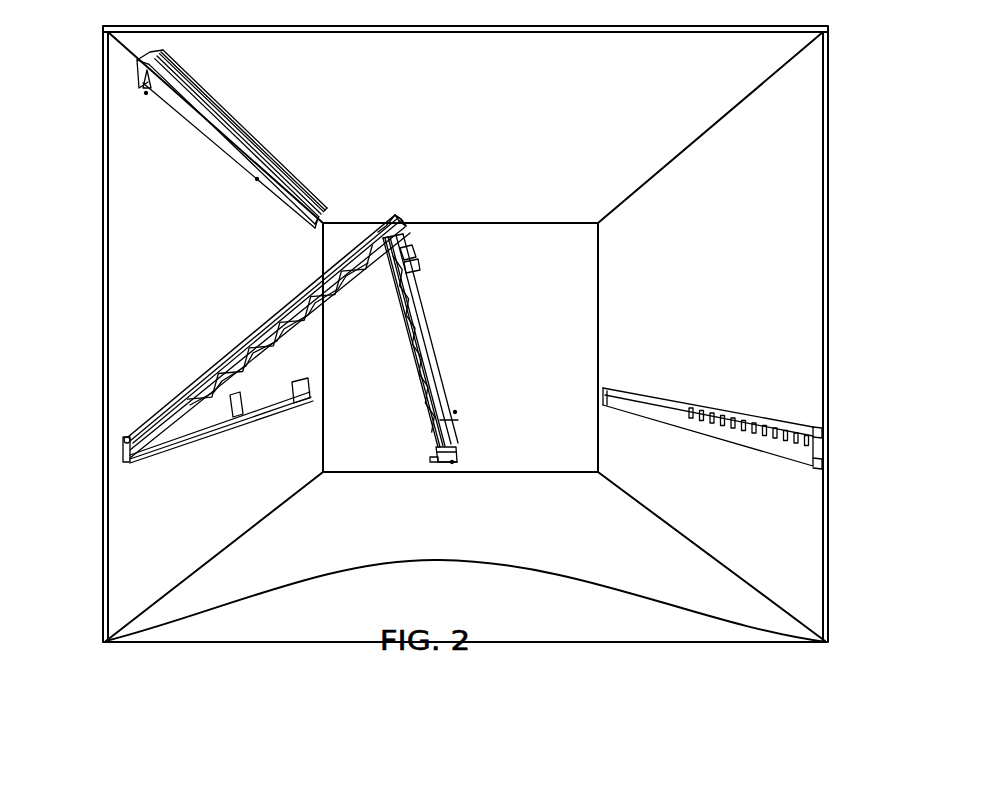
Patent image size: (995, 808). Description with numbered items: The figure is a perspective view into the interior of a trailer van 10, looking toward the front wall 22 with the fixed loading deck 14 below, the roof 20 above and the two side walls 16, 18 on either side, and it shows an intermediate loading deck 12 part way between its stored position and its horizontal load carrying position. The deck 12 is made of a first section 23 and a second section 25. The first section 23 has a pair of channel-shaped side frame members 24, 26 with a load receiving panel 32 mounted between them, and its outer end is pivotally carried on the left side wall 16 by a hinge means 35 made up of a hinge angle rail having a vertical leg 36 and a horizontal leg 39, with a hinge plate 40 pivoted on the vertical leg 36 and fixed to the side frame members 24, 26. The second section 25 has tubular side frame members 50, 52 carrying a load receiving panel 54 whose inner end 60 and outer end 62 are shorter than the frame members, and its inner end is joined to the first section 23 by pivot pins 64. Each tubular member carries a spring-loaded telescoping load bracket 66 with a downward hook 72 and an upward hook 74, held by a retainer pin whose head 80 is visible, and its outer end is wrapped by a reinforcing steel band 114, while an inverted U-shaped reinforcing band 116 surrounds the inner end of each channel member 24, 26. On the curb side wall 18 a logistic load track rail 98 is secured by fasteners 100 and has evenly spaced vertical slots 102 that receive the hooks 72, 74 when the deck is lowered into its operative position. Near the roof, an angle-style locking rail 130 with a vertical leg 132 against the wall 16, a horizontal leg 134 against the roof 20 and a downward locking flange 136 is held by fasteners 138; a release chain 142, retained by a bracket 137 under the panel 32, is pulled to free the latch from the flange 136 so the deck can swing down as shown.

The trailer van 10 is at (834, 264).
The intermediate loading deck 12 is at (309, 341).
The fixed loading deck 14 is at (690, 608).
The left side wall 16 is at (206, 552).
The curb side wall 18 is at (692, 535).
The roof 20 is at (447, 166).
The front wall 22 is at (534, 295).
The first section 23 is at (215, 357).
The side frame member 24 is at (267, 329).
The second section 25 is at (401, 372).
The side frame member 26 is at (414, 260).
The load receiving panel 32 is at (238, 418).
The hinge means 35 is at (130, 470).
The vertical leg 36 is at (206, 432).
The horizontal leg 39 is at (174, 457).
The hinge plate 40 is at (139, 432).
The side frame member 50 is at (424, 410).
The side frame member 52 is at (428, 341).
The load receiving panel 54 is at (432, 335).
The inner end 60 is at (422, 284).
The outer end 62 is at (452, 421).
The pivot pin 64 is at (378, 230).
The telescoping load bracket 66 is at (470, 409).
The hook 72 is at (437, 467).
The hook 74 is at (452, 468).
The head 80 is at (432, 447).
The load track rail 98 is at (712, 435).
The fasteners 100 is at (722, 409).
The slots 102 is at (790, 456).
The reinforcing steel band 114 is at (433, 460).
The reinforcing U-shaped band 116 is at (413, 218).
The locking rail 130 is at (228, 141).
The vertical leg 132 is at (224, 143).
The horizontal leg 134 is at (288, 156).
The locking flange 136 is at (243, 136).
The bracket 137 is at (295, 407).
The fasteners 138 is at (146, 90).
The release chain 142 is at (325, 362).